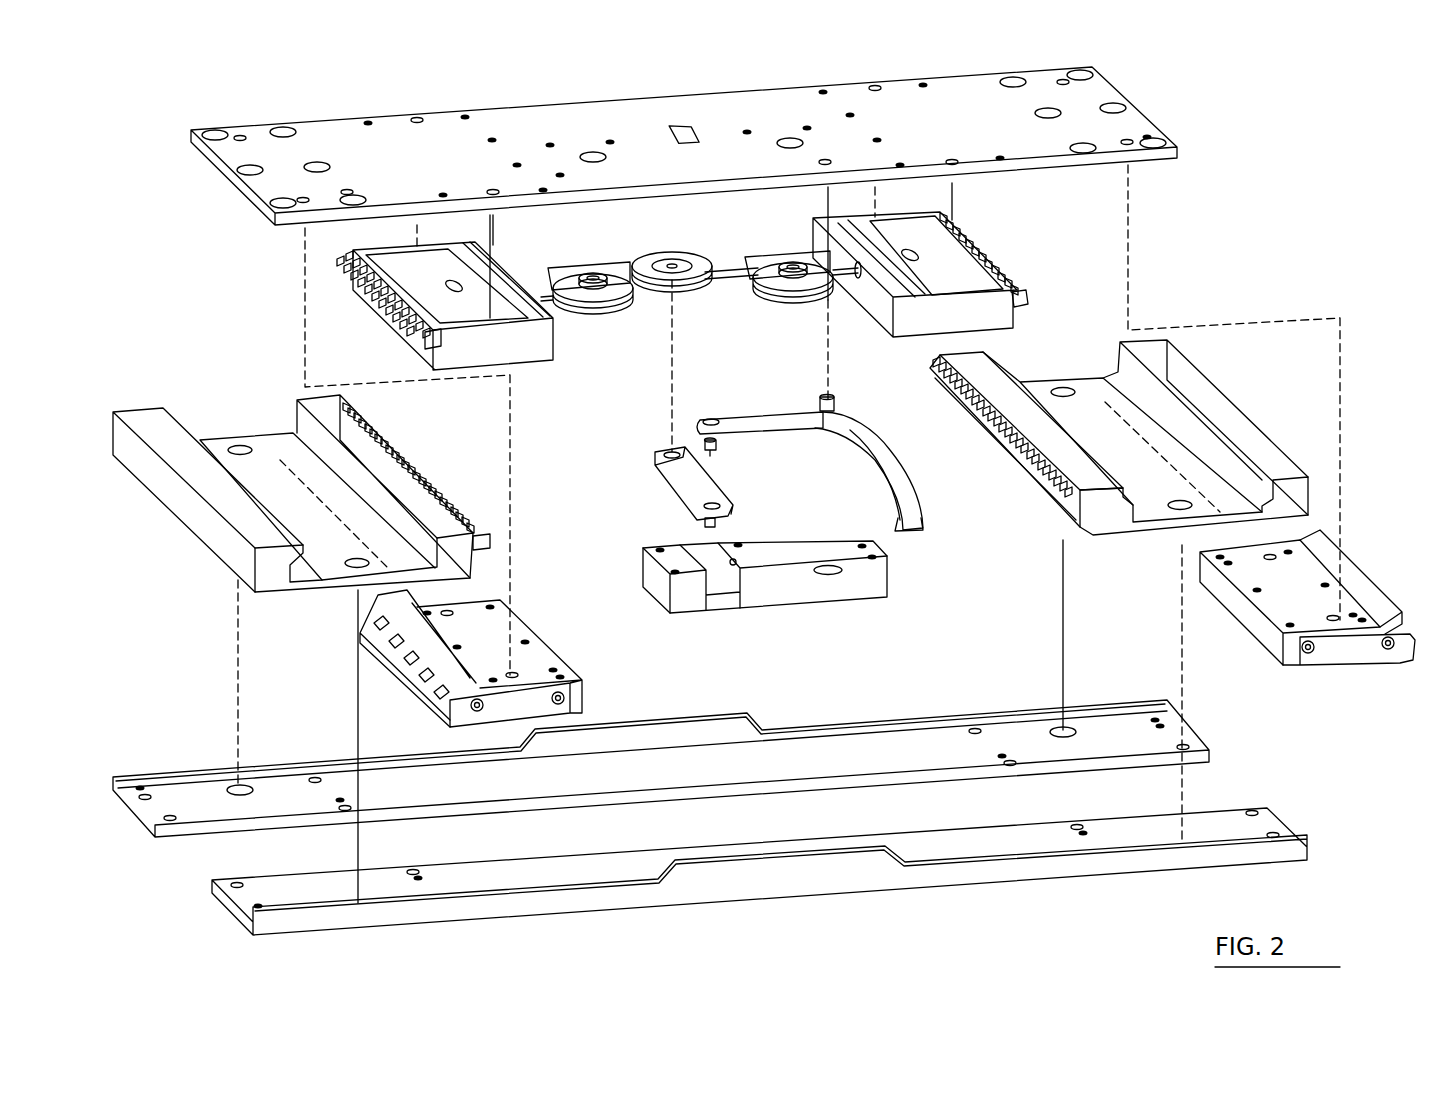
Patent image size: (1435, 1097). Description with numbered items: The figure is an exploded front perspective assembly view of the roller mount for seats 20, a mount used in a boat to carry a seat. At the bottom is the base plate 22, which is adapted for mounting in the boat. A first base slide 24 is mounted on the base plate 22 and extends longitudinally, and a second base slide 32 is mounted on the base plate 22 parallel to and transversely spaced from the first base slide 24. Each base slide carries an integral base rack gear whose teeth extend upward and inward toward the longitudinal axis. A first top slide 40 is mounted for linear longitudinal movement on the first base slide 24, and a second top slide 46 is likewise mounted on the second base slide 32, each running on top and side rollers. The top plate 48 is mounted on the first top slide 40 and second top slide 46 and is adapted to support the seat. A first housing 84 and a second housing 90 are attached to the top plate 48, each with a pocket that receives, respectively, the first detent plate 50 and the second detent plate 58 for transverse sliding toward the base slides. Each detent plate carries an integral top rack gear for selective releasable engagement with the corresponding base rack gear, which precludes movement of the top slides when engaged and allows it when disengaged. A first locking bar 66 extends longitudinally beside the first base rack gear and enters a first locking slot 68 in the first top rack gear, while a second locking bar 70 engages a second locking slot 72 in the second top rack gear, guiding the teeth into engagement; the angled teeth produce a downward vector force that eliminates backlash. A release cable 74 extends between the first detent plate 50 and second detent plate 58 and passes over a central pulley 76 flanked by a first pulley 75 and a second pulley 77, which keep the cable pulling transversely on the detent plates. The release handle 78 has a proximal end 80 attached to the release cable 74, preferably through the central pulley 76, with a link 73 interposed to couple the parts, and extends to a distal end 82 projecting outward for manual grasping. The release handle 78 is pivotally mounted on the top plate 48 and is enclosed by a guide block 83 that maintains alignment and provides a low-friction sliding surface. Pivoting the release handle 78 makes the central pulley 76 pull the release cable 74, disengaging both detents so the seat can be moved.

The roller mount for seats 20 is at (283, 103).
The base plate 22 is at (187, 800).
The first base slide 24 is at (232, 532).
The second base slide 32 is at (1180, 385).
The first top slide 40 is at (537, 660).
The second top slide 46 is at (1260, 627).
The top plate 48 is at (1117, 124).
The first detent plate 50 is at (432, 282).
The second detent plate 58 is at (944, 246).
The first locking bar 66 is at (490, 543).
The first locking slot 68 is at (393, 325).
The second locking bar 70 is at (1013, 460).
The second locking slot 72 is at (1017, 297).
The link 73 is at (680, 490).
The release cable 74 is at (730, 283).
The first pulley 75 is at (572, 290).
The central pulley 76 is at (645, 264).
The second pulley 77 is at (767, 277).
The release handle 78 is at (857, 438).
The proximal end 80 is at (725, 413).
The distal end 82 is at (913, 523).
The guide block 83 is at (797, 593).
The first housing 84 is at (523, 343).
The second housing 90 is at (977, 308).